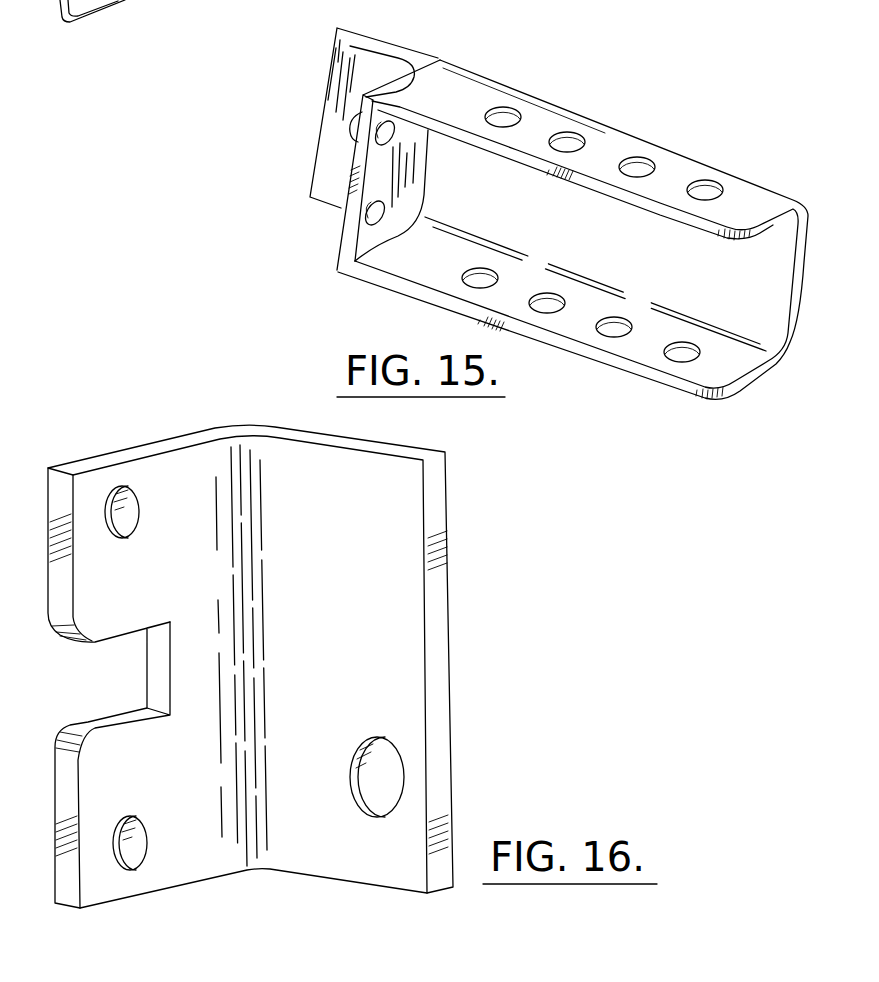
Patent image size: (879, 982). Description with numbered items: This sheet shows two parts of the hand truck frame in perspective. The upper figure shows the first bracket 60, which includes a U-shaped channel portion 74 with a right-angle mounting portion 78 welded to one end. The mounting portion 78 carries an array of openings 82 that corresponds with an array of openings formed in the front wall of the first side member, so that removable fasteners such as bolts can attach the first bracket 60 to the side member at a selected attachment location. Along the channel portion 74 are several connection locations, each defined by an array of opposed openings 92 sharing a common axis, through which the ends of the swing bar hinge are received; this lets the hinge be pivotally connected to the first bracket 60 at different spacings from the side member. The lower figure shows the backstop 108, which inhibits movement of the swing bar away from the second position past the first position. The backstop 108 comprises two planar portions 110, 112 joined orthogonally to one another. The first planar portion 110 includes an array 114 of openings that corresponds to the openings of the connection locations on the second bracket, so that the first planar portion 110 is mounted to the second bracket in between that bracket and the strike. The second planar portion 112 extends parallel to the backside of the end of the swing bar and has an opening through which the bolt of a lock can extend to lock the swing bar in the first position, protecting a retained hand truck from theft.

In FIG. 15, the first bracket 60 is at (582, 213).
In FIG. 15, the U-shaped channel portion 74 is at (767, 262).
In FIG. 15, the right-angle mounting portion 78 is at (355, 47).
In FIG. 15, the openings 82 is at (381, 210).
In FIG. 15, the opposed openings 92 is at (512, 108).
In FIG. 16, the backstop 108 is at (219, 412).
In FIG. 16, the first planar portion 110 is at (175, 517).
In FIG. 16, the second planar portion 112 is at (376, 578).
In FIG. 16, the array of openings 114 is at (122, 542).